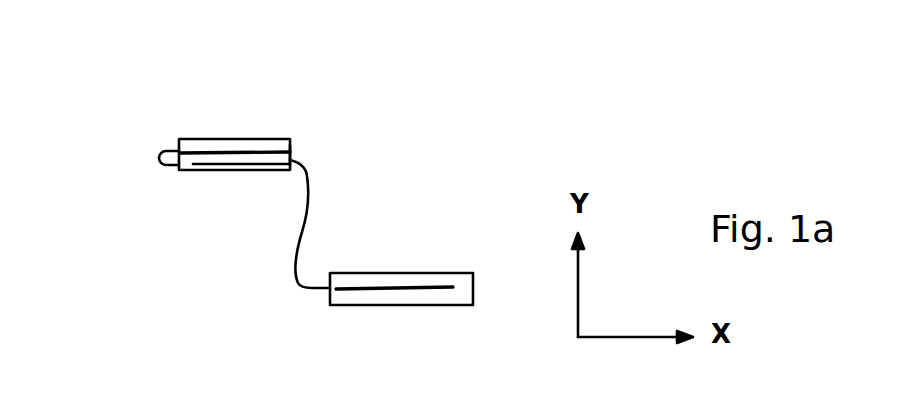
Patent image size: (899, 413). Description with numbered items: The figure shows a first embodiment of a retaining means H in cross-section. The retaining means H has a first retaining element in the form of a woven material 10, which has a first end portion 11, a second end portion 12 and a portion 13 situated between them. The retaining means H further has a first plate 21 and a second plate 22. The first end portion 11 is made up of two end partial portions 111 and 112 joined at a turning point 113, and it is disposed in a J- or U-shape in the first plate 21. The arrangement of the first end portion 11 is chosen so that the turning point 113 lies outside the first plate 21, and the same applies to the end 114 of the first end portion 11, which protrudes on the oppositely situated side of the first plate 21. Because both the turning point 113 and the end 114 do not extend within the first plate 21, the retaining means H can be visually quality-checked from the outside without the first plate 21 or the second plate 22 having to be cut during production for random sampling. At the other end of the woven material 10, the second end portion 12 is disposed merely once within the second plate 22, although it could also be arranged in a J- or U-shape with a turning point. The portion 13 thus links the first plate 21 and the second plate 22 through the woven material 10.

The woven material 10 is at (297, 283).
The first end portion 11 is at (213, 166).
The second end portion 12 is at (409, 297).
The portion situated therebetween 13 is at (345, 184).
The first plate 21 is at (228, 170).
The second plate 22 is at (440, 277).
The end partial portion 111 is at (244, 150).
The end partial portion 112 is at (195, 167).
The turning point 113 is at (170, 149).
The end of the first end portion 114 is at (300, 147).
The retaining means H is at (210, 113).